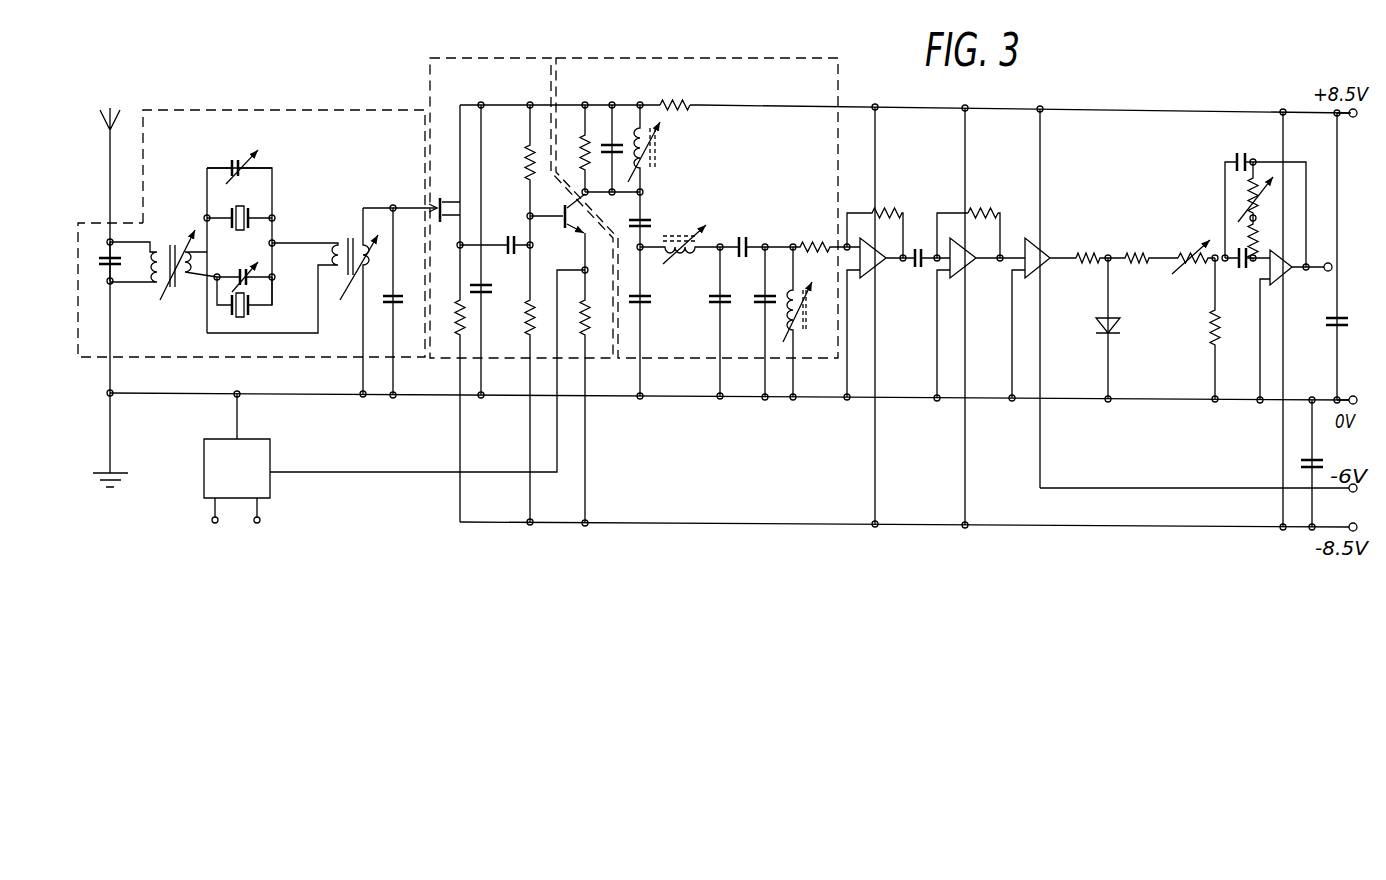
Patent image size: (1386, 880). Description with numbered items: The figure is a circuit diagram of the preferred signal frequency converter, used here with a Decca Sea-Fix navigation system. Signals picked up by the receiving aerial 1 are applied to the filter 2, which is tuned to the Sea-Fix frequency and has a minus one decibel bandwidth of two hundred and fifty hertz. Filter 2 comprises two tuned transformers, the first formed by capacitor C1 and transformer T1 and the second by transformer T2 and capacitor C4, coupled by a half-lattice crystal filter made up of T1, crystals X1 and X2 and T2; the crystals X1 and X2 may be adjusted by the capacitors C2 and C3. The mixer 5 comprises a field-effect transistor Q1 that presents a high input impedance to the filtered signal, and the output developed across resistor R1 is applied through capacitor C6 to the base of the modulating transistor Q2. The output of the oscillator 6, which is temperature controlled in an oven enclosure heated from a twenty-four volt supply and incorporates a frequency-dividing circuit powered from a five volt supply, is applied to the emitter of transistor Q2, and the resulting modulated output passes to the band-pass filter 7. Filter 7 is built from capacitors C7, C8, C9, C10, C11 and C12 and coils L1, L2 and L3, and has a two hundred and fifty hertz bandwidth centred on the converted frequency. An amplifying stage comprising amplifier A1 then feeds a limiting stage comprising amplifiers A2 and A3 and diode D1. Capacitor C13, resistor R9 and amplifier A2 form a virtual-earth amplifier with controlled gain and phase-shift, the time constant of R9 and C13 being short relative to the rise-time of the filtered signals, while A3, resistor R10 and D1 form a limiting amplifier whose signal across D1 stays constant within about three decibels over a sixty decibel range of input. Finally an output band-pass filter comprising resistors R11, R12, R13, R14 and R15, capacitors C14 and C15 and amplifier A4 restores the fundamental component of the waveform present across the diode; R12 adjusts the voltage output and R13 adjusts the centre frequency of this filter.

The receiving aerial 1 is at (108, 178).
The filter 2 is at (243, 108).
The mixer 5 is at (490, 58).
The oscillator 6 is at (241, 485).
The band-pass filter 7 is at (665, 58).
The capacitor C1 is at (101, 264).
The capacitor C2 is at (266, 170).
The capacitor C3 is at (252, 283).
The capacitor C4 is at (383, 300).
The capacitor C6 is at (495, 231).
The capacitor C7 is at (622, 139).
The capacitor C8 is at (652, 221).
The capacitor C9 is at (654, 321).
The capacitor C10 is at (709, 321).
The capacitor C11 is at (756, 232).
The capacitor C12 is at (756, 322).
The capacitor C13 is at (918, 270).
The capacitor C14 is at (1239, 191).
The capacitor C15 is at (1239, 275).
The crystal X1 is at (238, 204).
The crystal X2 is at (243, 313).
The transformer T1 is at (163, 279).
The transformer T2 is at (292, 301).
The field-effect transistor Q1 is at (443, 197).
The modulating transistor Q2 is at (557, 232).
The resistor R1 is at (466, 325).
The resistor R9 is at (986, 204).
The resistor R10 is at (1088, 253).
The resistor R11 is at (1143, 253).
The resistor R12 is at (1206, 270).
The resistor R13 is at (1249, 189).
The resistor R14 is at (1249, 218).
The resistor R15 is at (1198, 328).
The coil L1 is at (655, 148).
The coil L2 is at (680, 255).
The coil L3 is at (804, 322).
The diode D1 is at (1121, 326).
The amplifier A1 is at (876, 272).
The amplifier A2 is at (966, 272).
The amplifier A3 is at (1045, 255).
The amplifier A4 is at (1283, 278).